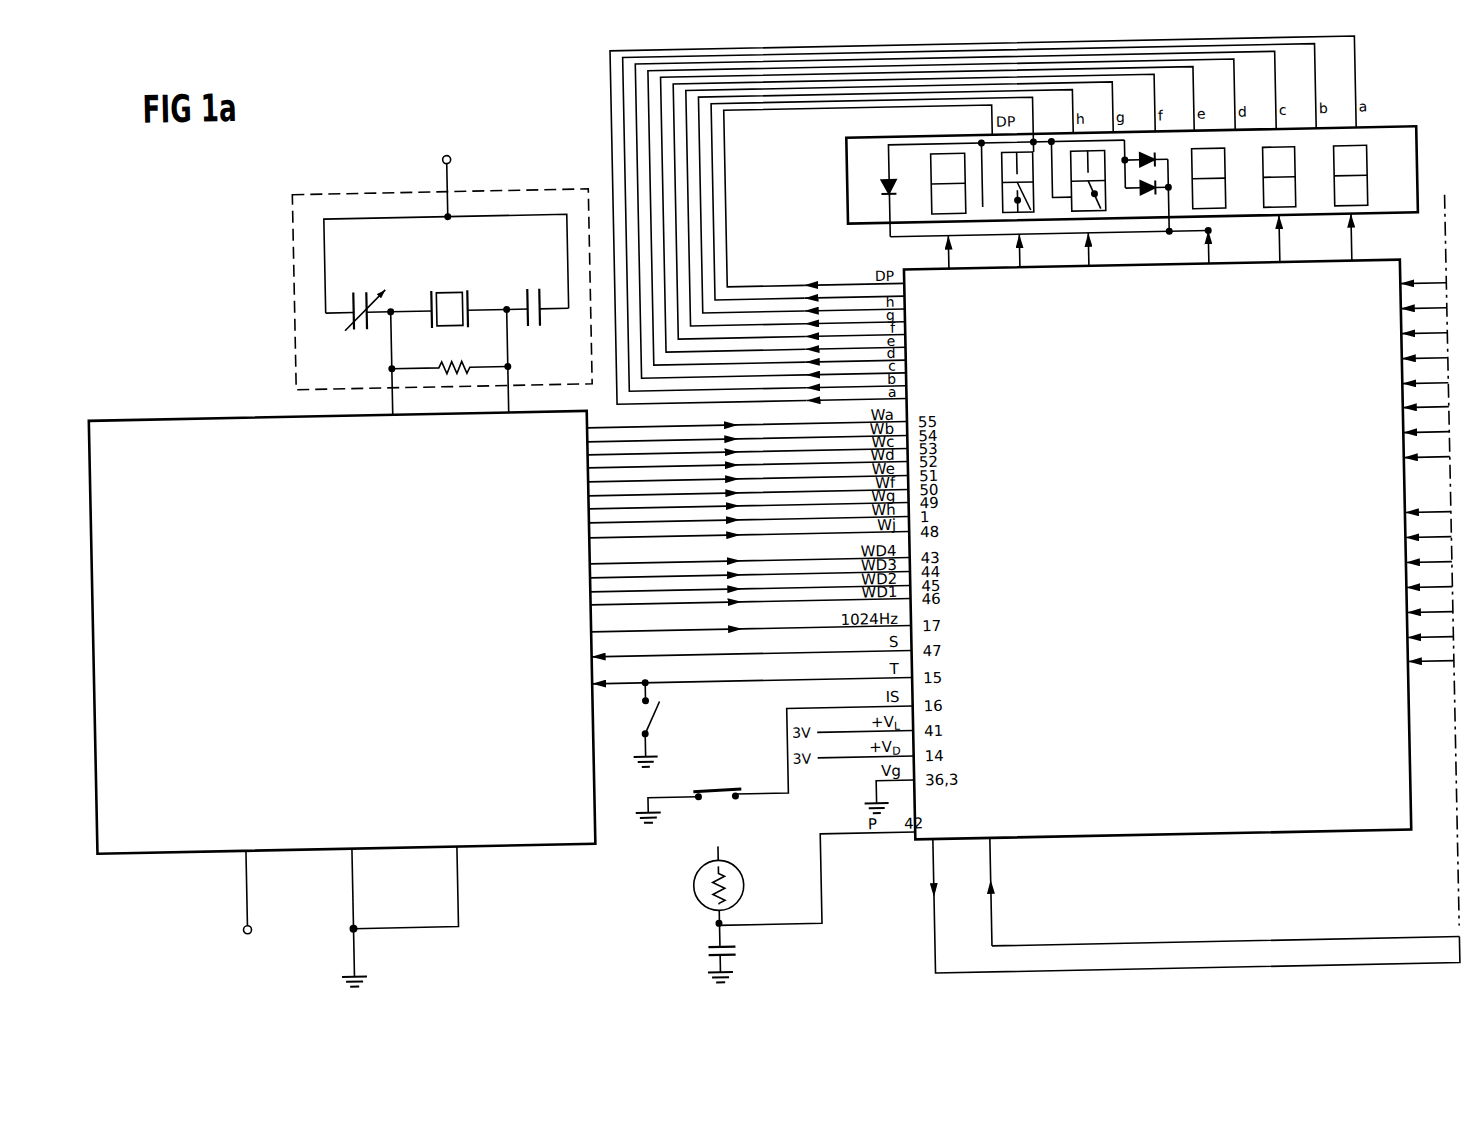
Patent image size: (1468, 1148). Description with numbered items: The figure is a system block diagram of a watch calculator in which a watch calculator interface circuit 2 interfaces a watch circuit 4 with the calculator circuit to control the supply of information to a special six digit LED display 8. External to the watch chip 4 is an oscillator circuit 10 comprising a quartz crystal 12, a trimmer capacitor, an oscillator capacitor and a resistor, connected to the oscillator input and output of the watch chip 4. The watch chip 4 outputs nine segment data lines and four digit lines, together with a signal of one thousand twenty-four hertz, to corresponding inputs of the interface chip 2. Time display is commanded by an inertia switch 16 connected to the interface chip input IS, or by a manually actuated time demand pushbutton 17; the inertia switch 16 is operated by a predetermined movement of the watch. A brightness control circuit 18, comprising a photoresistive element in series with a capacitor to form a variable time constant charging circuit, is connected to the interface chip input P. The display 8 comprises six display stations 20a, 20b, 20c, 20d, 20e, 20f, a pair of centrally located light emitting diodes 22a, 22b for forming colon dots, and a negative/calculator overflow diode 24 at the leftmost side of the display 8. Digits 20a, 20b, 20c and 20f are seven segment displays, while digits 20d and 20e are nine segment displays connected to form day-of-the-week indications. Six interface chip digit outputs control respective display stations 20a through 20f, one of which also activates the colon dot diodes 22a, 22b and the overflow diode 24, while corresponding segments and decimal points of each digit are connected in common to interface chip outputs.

The watch calculator interface circuit 2 is at (1350, 845).
The watch circuit 4 is at (112, 843).
The six digit LED display 8 is at (1402, 140).
The oscillator circuit 10 is at (299, 199).
The quartz crystal 12 is at (444, 328).
The inertia switch 16 is at (725, 742).
The time demand pushbutton 17 is at (634, 721).
The brightness control circuit 18 is at (681, 930).
The display station 20a is at (1375, 207).
The display station 20b is at (1303, 207).
The display station 20c is at (1233, 208).
The display station 20d is at (1080, 211).
The display station 20e is at (1010, 210).
The display station 20f is at (939, 210).
The light emitting diode 22a is at (1157, 168).
The light emitting diode 22b is at (1152, 211).
The negative/calculator overflow diode 24 is at (887, 192).